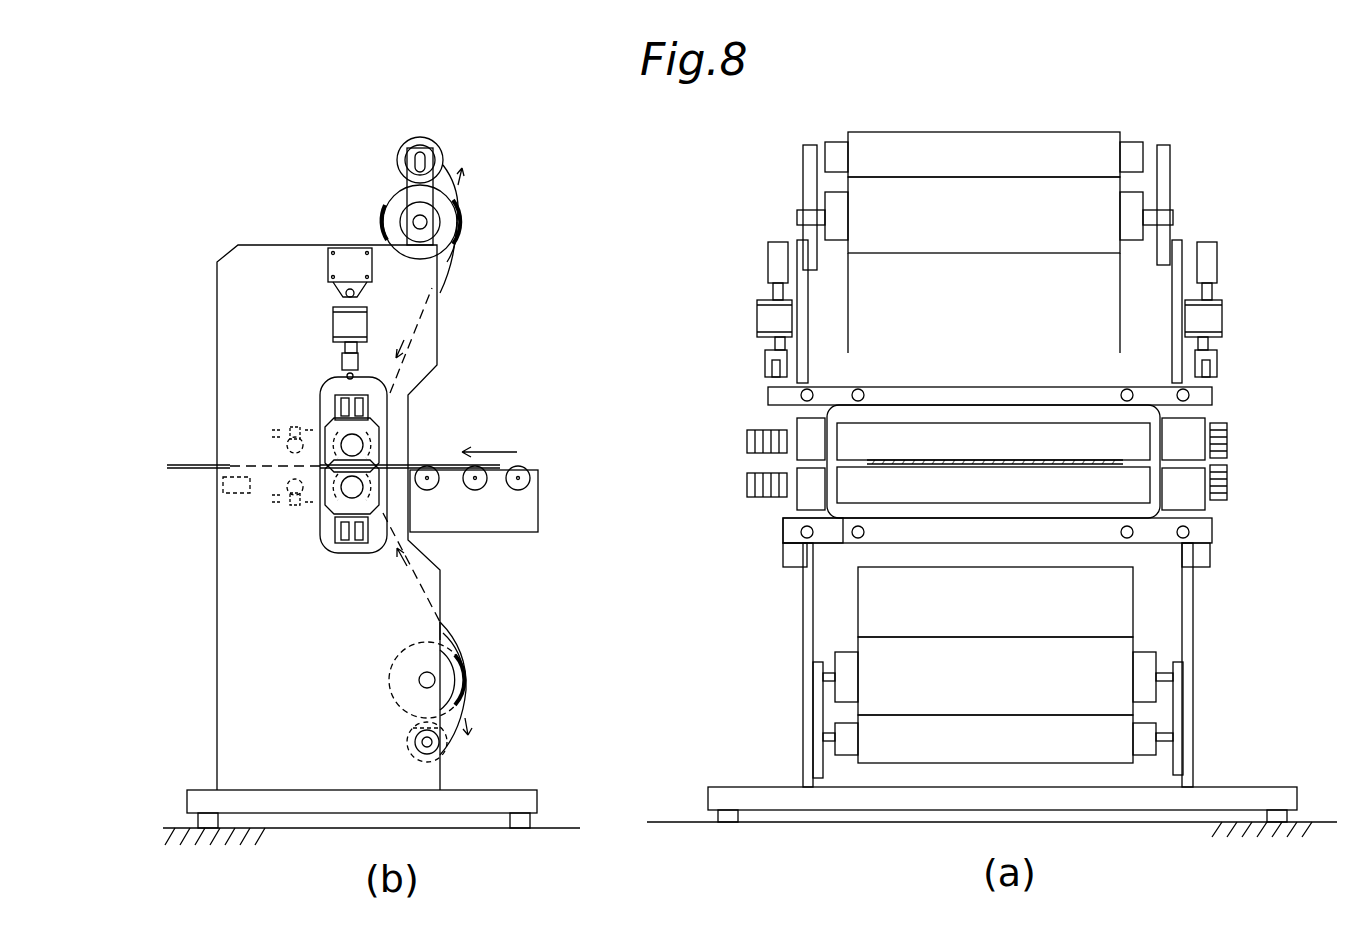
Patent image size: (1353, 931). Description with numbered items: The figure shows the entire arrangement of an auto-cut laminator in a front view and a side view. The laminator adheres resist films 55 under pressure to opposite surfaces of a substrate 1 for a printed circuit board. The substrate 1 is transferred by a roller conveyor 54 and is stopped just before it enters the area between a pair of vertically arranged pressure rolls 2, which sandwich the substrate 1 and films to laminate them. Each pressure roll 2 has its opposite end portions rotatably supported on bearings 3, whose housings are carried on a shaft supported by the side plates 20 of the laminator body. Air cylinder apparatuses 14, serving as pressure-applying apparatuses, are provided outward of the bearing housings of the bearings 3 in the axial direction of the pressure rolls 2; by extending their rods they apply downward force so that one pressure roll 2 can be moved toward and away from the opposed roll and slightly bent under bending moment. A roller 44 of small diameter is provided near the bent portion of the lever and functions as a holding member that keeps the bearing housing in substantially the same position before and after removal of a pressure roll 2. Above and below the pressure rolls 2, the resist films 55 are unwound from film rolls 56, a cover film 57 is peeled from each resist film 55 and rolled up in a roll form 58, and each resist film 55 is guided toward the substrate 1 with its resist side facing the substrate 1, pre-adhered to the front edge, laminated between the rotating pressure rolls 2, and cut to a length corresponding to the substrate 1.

The substrate 1 is at (433, 457).
The pressure rolls 2 is at (345, 440).
The bearings 3 is at (781, 412).
The air cylinder apparatus 14 is at (337, 323).
The side plates 20 is at (232, 275).
The roller 44 is at (797, 532).
The roller conveyor 54 is at (494, 508).
The resist films 55 is at (447, 262).
The film rolls 56 is at (383, 210).
The cover film 57 is at (452, 167).
The roll form 58 is at (412, 137).